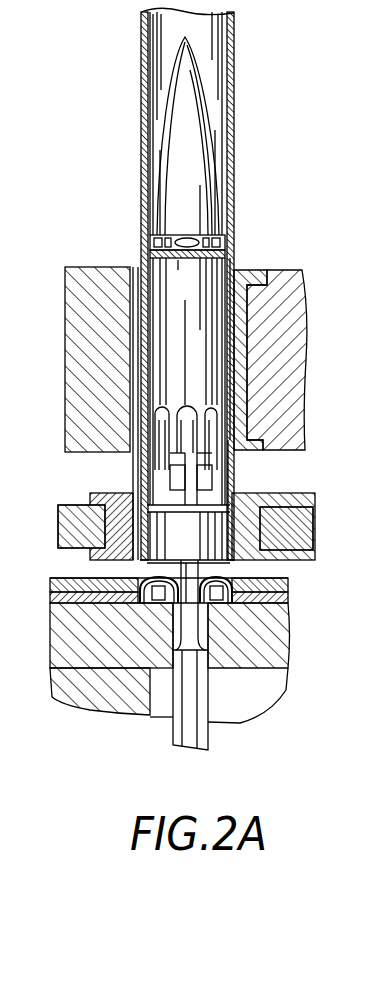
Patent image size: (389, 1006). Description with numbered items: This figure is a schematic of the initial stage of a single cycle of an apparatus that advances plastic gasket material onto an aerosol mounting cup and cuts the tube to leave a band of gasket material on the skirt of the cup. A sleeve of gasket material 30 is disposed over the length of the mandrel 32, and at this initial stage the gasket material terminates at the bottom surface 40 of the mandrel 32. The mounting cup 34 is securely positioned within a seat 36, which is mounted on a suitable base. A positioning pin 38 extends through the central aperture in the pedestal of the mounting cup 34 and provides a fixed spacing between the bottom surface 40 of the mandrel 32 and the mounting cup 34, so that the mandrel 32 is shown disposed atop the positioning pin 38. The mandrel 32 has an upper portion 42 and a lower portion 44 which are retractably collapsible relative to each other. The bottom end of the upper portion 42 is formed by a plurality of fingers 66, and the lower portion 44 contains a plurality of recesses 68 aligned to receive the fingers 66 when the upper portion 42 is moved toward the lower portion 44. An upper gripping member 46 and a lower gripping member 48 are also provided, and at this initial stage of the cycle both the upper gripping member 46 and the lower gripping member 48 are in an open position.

The sleeve of gasket material 30 is at (142, 104).
The mandrel 32 is at (168, 290).
The mounting cup 34 is at (228, 576).
The seat 36 is at (178, 600).
The positioning pin 38 is at (286, 631).
The bottom surface of the mandrel 40 is at (232, 567).
The upper portion of the mandrel 42 is at (212, 382).
The lower portion of the mandrel 44 is at (240, 512).
The upper gripping member 46 is at (284, 320).
The lower gripping member 48 is at (76, 516).
The fingers 66 is at (147, 453).
The recesses 68 is at (175, 479).